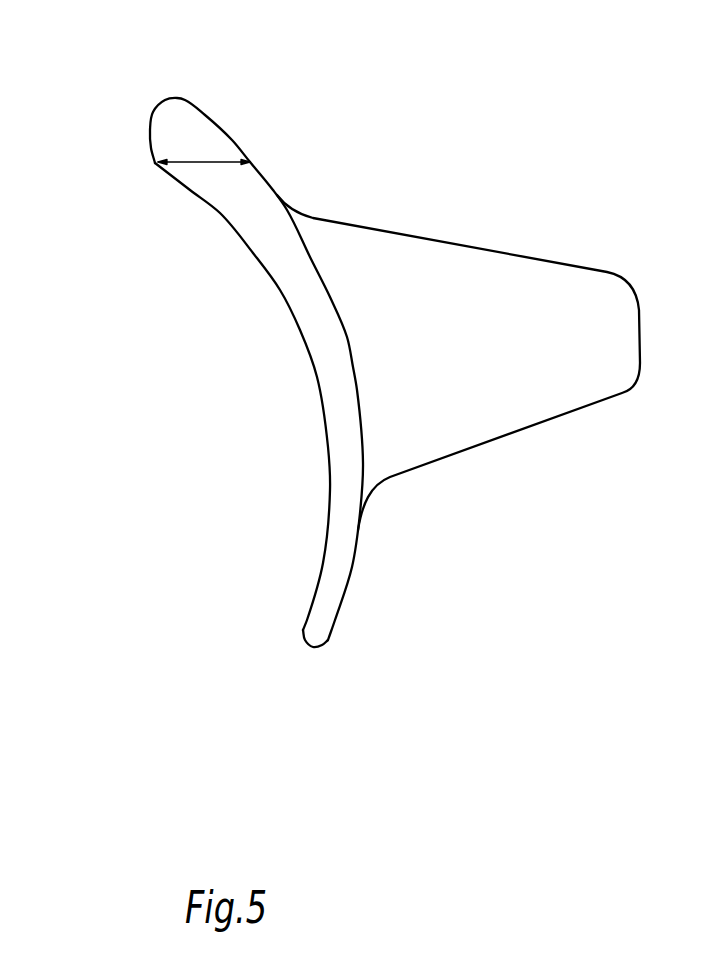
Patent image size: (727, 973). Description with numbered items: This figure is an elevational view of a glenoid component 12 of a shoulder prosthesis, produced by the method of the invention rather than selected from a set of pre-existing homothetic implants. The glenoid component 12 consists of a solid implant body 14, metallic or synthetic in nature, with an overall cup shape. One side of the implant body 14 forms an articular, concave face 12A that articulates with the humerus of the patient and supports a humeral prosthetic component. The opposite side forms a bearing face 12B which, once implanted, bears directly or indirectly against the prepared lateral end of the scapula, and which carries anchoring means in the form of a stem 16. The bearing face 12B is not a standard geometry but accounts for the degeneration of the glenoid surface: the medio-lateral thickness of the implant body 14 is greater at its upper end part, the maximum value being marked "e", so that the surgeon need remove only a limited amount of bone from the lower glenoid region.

The glenoid component 12 is at (345, 332).
The articular concave face 12A is at (317, 397).
The bearing face 12B is at (362, 533).
The implant body 14 is at (327, 598).
The stem 16 is at (458, 362).